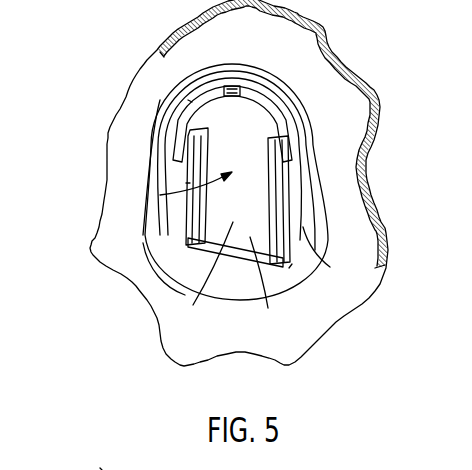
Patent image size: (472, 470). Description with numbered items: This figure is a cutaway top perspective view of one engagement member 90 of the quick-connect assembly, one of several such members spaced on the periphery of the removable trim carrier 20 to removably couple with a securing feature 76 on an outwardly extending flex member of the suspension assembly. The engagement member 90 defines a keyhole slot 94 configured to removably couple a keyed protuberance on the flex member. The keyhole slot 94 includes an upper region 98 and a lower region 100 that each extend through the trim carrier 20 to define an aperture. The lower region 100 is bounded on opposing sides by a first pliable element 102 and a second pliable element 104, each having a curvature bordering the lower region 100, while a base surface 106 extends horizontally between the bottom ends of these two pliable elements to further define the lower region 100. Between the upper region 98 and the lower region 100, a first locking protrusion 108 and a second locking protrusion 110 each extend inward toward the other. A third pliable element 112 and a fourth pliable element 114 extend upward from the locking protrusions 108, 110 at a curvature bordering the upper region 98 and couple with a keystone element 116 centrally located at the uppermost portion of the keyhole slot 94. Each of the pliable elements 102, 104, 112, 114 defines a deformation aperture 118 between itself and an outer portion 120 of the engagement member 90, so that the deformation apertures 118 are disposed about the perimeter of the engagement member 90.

The engagement member 90 is at (95, 84).
The fourth pliable element 114 is at (190, 100).
The trim carrier 20 is at (205, 53).
The first locking protrusion 108 is at (292, 128).
The third pliable element 112 is at (263, 97).
The upper region 98 is at (268, 138).
The keystone element 116 is at (233, 84).
The keyhole slot 94 is at (182, 203).
The second locking protrusion 110 is at (188, 148).
The first pliable element 102 is at (258, 275).
The lower region 100 is at (240, 265).
The base surface 106 is at (193, 305).
The second pliable element 104 is at (143, 243).
The outer portion 120 is at (307, 228).
The deformation aperture 118 is at (188, 100).
The securing feature 76 is at (100, 468).